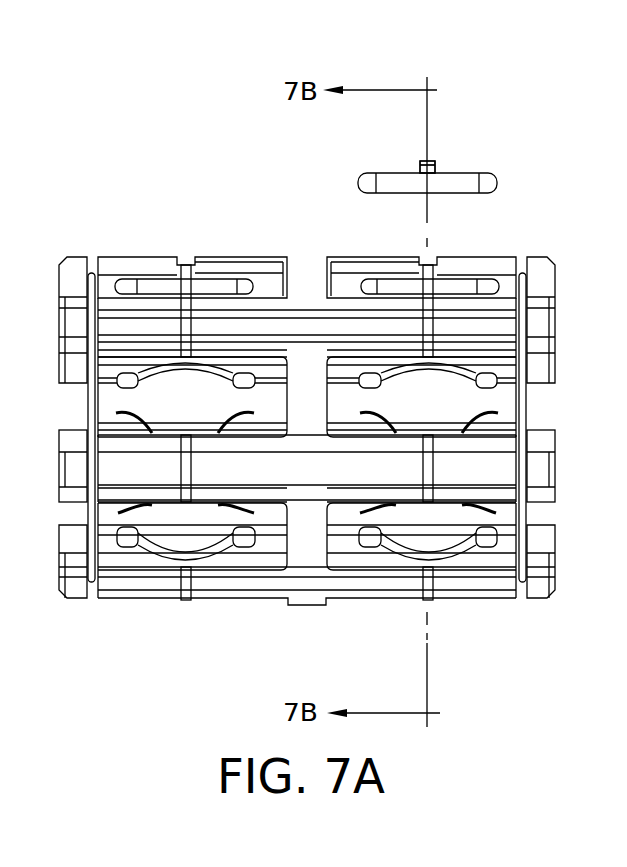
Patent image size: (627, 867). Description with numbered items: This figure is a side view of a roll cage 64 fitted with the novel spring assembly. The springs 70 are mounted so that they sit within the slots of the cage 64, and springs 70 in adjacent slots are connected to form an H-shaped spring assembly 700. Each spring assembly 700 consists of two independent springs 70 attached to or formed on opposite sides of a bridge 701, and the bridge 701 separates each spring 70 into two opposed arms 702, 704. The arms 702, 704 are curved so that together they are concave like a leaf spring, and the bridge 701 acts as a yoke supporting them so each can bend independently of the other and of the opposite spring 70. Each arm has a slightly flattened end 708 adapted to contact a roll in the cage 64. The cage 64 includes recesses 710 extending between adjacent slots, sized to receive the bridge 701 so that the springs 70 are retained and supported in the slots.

The roll cage 64 is at (342, 366).
The spring 70 is at (490, 414).
The spring assembly 700 is at (473, 156).
The bridge 701 is at (183, 257).
The arm 702 is at (455, 188).
The arm 704 is at (400, 183).
The end 708 is at (497, 182).
The recess 710 is at (197, 325).